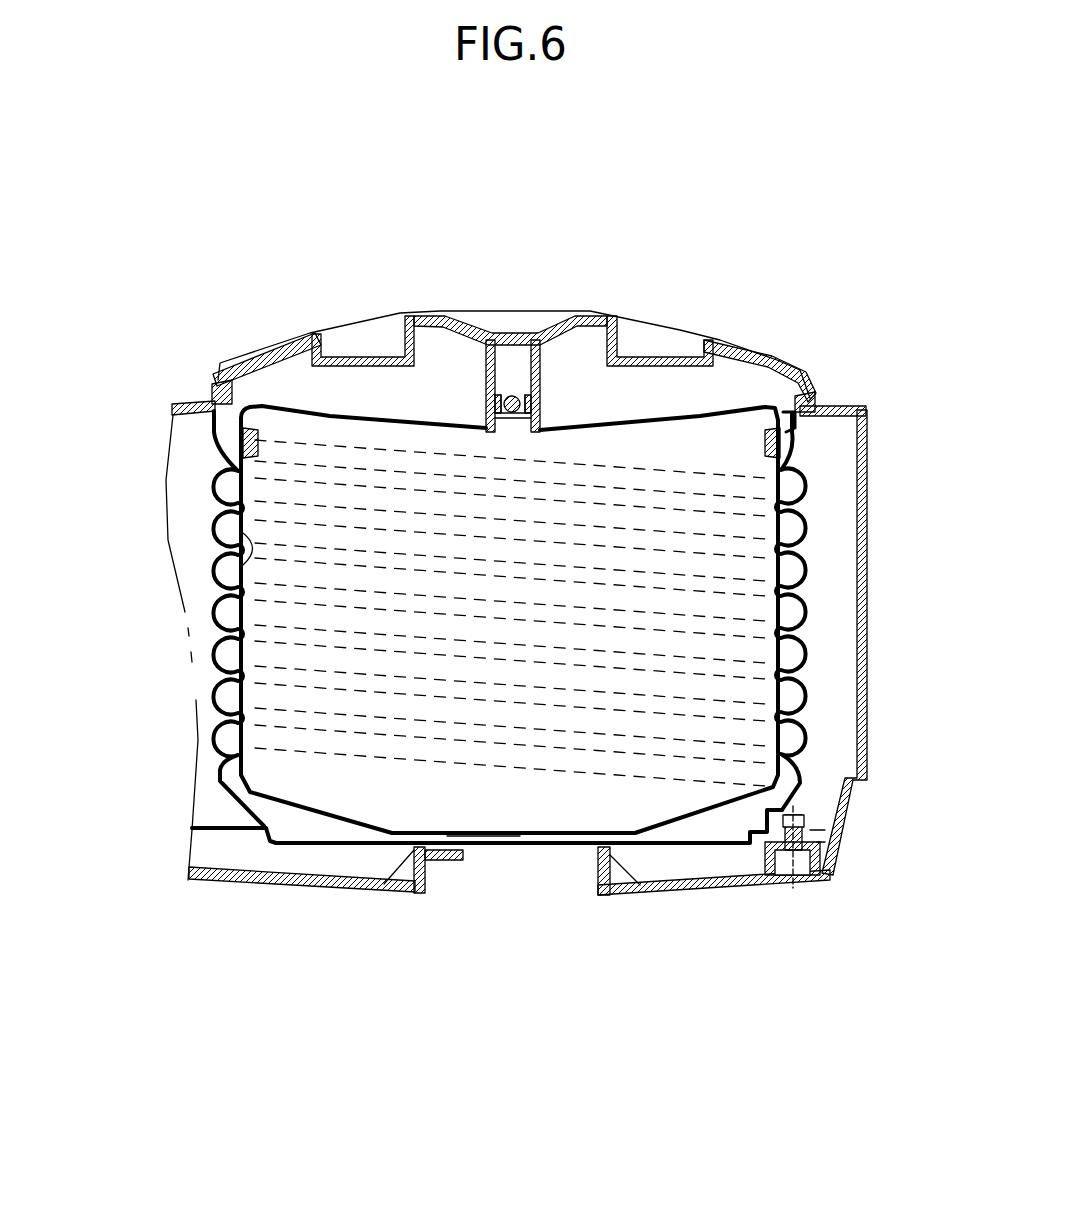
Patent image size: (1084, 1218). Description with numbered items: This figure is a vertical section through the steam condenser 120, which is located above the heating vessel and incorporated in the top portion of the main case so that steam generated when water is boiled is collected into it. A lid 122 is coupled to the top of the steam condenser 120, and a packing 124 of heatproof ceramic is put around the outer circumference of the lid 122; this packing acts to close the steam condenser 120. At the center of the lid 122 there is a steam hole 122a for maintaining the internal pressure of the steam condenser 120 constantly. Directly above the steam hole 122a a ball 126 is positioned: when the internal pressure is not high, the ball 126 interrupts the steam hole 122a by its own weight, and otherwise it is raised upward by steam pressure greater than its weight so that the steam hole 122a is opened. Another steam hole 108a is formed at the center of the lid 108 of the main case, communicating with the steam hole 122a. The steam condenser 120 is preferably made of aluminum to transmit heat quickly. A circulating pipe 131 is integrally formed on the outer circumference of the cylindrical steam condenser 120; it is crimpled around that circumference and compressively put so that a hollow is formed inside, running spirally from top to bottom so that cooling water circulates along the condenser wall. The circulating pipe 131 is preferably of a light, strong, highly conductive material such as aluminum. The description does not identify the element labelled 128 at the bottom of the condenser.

The lid 108 is at (762, 347).
The steam hole 108a is at (513, 333).
The steam condenser 120 is at (235, 568).
The lid 122 is at (427, 427).
The steam hole 122a is at (510, 428).
The packing 124 is at (793, 450).
The ball 126 is at (511, 396).
The bottom plate 128 is at (487, 853).
The circulating pipe 131 is at (805, 512).